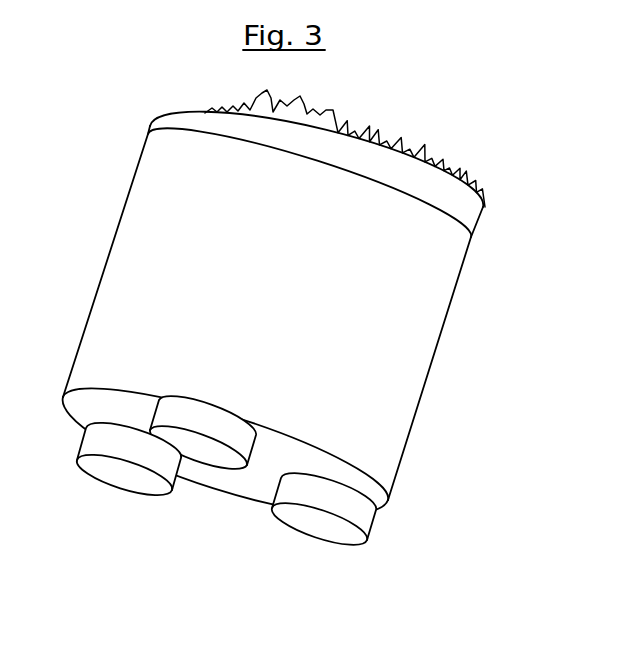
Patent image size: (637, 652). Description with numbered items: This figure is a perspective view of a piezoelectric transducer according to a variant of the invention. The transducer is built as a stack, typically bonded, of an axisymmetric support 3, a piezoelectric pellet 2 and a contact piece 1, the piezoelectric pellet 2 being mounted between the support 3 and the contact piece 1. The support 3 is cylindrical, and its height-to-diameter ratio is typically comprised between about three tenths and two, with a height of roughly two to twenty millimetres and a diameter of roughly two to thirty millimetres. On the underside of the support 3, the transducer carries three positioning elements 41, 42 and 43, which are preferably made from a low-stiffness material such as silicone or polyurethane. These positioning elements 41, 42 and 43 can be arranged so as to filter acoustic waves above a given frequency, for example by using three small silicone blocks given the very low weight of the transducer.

The contact piece 1 is at (480, 210).
The piezoelectric pellet 2 is at (172, 117).
The axisymmetric support 3 is at (130, 267).
The positioning element 41 is at (200, 423).
The positioning element 42 is at (333, 538).
The positioning element 43 is at (110, 472).